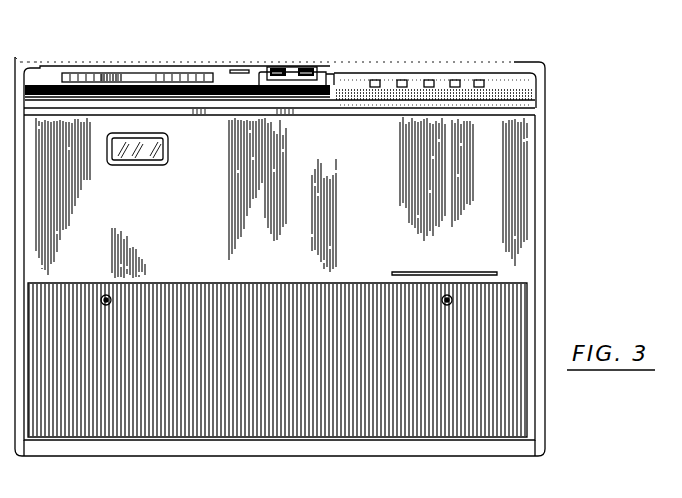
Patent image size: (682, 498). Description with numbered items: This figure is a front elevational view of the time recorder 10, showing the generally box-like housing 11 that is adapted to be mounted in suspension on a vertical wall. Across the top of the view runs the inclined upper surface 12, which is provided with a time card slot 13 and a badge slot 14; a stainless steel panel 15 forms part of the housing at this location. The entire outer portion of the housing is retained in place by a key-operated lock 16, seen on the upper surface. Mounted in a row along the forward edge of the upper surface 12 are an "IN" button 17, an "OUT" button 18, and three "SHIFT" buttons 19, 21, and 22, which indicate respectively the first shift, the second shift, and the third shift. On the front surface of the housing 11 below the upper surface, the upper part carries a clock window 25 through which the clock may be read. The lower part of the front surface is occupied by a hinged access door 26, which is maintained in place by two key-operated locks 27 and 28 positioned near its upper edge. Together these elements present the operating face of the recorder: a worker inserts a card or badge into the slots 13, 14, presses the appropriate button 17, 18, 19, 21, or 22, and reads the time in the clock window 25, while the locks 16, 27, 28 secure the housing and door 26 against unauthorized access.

The time recorder 10 is at (531, 64).
The housing 11 is at (511, 181).
The inclined upper surface 12 is at (221, 100).
The time card slot 13 is at (143, 76).
The badge slot 14 is at (285, 71).
The stainless steel panel 15 is at (259, 73).
The key-operated lock 16 is at (240, 69).
The "IN" button 17 is at (377, 80).
The "OUT" button 18 is at (402, 80).
The "SHIFT" button 19 is at (429, 80).
The "SHIFT" button 21 is at (455, 80).
The "SHIFT" button 22 is at (480, 80).
The clock window 25 is at (147, 152).
The hinged access door 26 is at (497, 405).
The key-operated lock 27 is at (105, 294).
The key-operated lock 28 is at (448, 293).